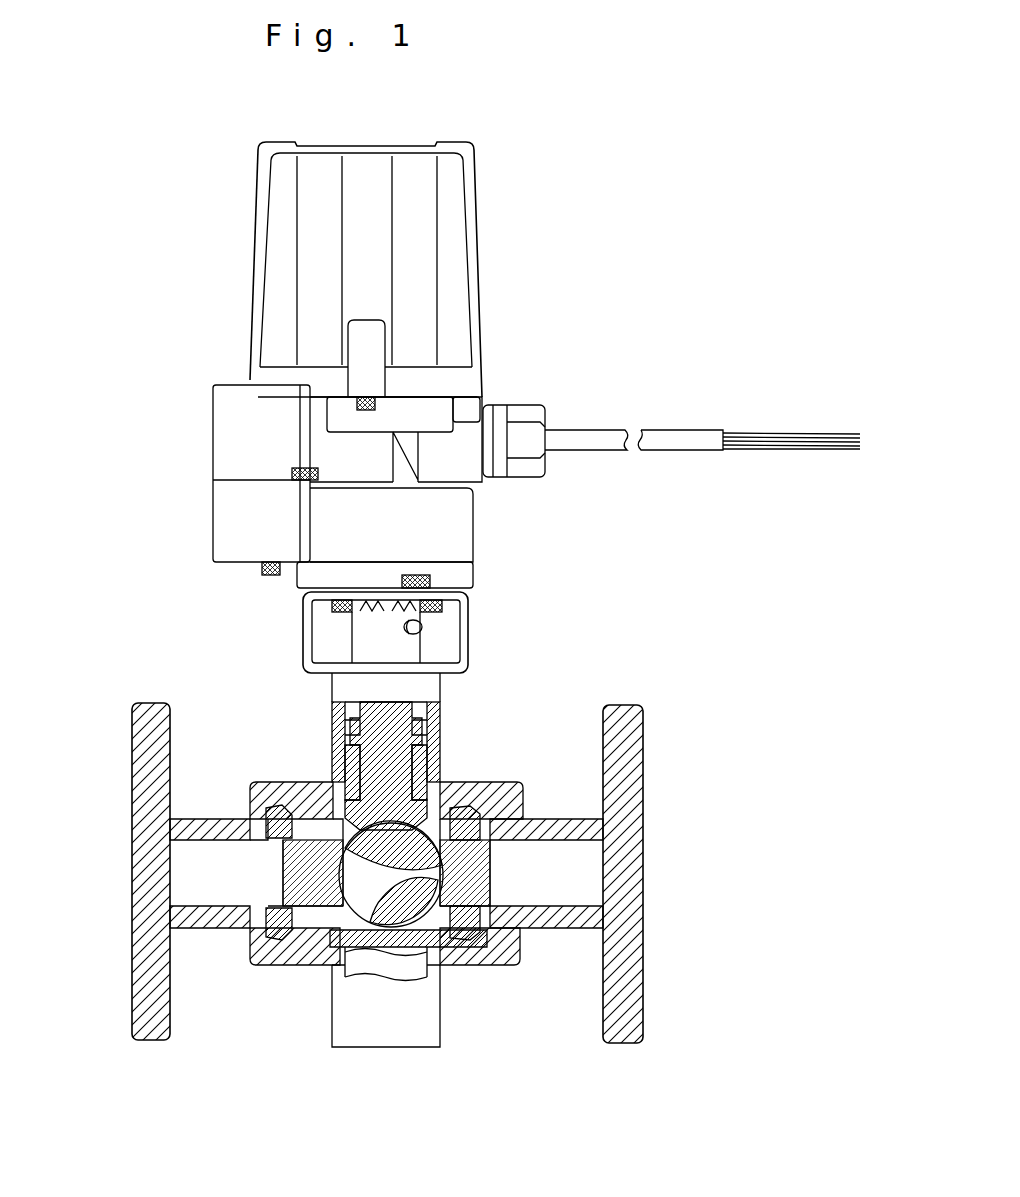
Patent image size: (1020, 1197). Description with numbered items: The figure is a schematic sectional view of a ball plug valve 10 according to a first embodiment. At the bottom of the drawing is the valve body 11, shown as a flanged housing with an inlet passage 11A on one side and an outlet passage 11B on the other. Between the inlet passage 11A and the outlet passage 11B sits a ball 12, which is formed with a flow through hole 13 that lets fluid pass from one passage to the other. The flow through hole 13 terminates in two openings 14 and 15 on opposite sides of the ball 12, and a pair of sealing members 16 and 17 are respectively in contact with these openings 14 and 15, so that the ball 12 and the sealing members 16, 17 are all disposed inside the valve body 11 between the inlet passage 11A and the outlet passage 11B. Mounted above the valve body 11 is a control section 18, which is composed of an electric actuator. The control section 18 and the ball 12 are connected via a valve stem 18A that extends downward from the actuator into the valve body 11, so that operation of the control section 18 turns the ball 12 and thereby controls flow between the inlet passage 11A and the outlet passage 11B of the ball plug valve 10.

The ball plug valve 10 is at (130, 352).
The valve body 11 is at (272, 782).
The inlet passage 11A is at (145, 858).
The outlet passage 11B is at (628, 852).
The ball 12 is at (392, 930).
The flow through hole 13 is at (365, 970).
The opening 14 is at (335, 865).
The opening 15 is at (440, 870).
The sealing member 16 is at (333, 843).
The sealing member 17 is at (443, 900).
The control section 18 is at (477, 258).
The valve stem 18A is at (412, 726).